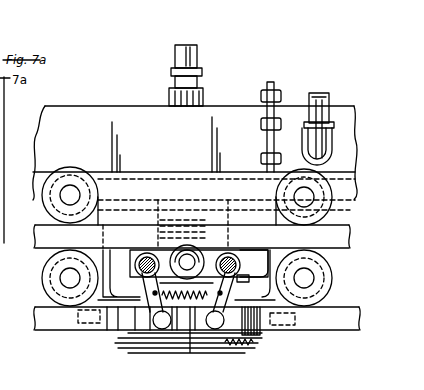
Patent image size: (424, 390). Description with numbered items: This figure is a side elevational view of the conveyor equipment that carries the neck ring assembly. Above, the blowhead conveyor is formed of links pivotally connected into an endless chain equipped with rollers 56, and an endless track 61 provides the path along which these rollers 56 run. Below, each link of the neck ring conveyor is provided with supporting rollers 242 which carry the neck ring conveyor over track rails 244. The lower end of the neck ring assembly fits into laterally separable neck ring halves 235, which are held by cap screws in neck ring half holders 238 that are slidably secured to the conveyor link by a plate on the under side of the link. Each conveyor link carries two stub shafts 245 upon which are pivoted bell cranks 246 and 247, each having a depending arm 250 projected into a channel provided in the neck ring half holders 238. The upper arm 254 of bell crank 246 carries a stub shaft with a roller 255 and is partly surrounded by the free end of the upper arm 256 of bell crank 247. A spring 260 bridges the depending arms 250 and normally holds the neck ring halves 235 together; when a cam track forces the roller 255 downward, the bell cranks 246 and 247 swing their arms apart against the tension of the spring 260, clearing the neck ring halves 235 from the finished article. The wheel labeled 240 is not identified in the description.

The rollers 56 is at (78, 167).
The endless track 61 is at (108, 226).
The supporting rollers 242 is at (65, 255).
The bell crank 247 is at (142, 250).
The upper arm 256 is at (153, 240).
The roller 255 is at (213, 245).
The upper arm 254 is at (222, 248).
The stub shafts 245 is at (233, 253).
The bell crank 246 is at (239, 272).
The wheel 240 is at (270, 295).
The spring 260 is at (230, 291).
The track rails 244 is at (70, 323).
The neck ring half holders 238 is at (143, 332).
The neck ring halves 235 is at (190, 322).
The depending arm 250 is at (215, 350).